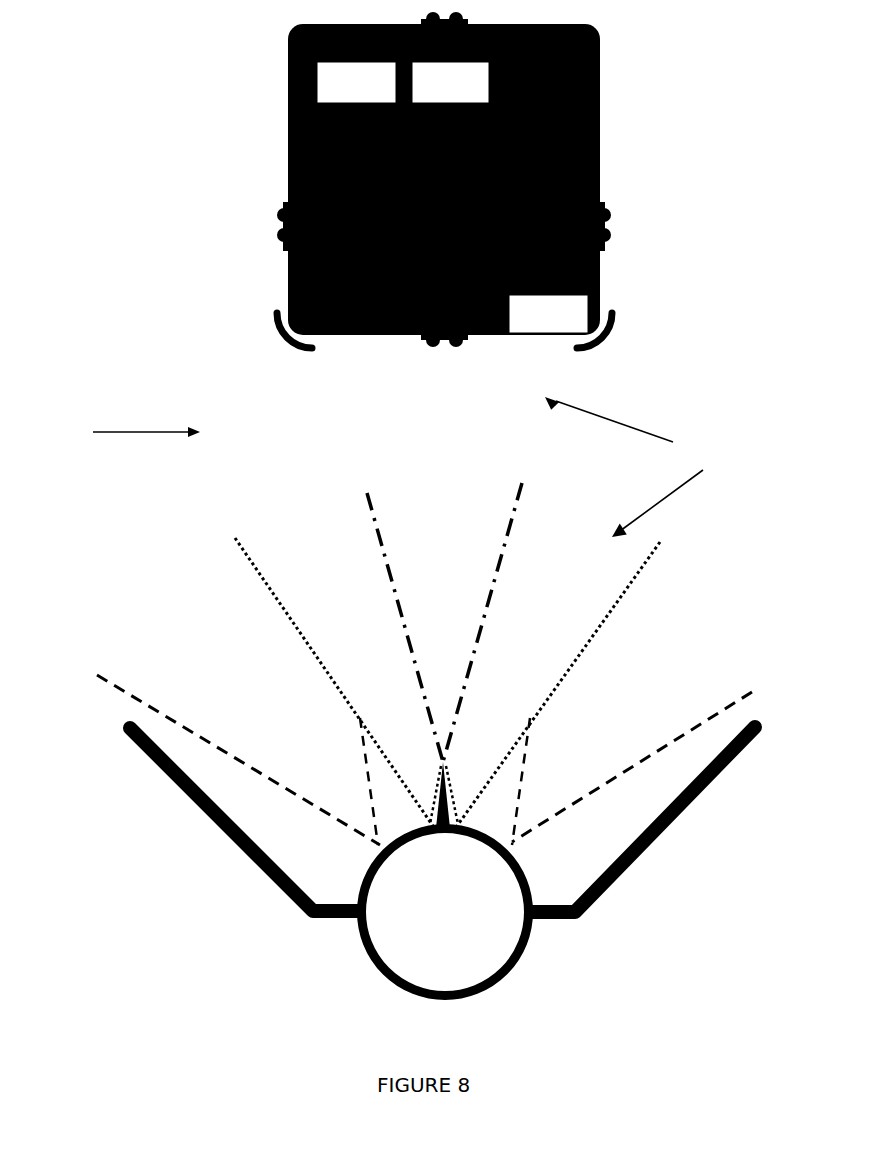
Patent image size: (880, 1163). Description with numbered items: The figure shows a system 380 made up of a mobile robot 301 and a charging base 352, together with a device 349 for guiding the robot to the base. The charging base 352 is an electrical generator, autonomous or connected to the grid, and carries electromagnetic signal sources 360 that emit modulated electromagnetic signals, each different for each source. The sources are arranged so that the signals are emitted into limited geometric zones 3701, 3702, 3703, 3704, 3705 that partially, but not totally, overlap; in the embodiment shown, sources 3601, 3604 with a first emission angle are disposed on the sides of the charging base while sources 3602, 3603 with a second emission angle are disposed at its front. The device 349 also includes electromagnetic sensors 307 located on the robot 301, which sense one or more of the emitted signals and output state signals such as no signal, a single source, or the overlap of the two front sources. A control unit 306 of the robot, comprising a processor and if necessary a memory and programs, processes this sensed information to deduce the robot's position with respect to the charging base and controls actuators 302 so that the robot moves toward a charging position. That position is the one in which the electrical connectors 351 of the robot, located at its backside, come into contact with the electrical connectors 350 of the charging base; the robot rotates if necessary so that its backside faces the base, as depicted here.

The mobile robot 301 is at (548, 314).
The actuators 302 is at (450, 82).
The control unit 306 is at (356, 82).
The electromagnetic sensors 307 is at (625, 223).
The device for guiding the mobile robot 349 is at (634, 467).
The electrical connectors of the charging base 350 is at (160, 755).
The electrical connectors of the robot 351 is at (613, 328).
The charging base 352 is at (445, 912).
The electromagnetic signal sources 360 is at (403, 822).
The source 360_1 3601 is at (377, 850).
The source 360_2 3602 is at (438, 832).
The source 360_3 3603 is at (458, 822).
The source 360_4 3604 is at (510, 848).
The limited geometric zone 3701 is at (238, 752).
The limited geometric zone 3702 is at (334, 691).
The limited geometric zone 3703 is at (632, 696).
The limited geometric zone 3704 is at (558, 693).
The limited geometric zone 3705 is at (444, 655).
The system 380 is at (127, 432).